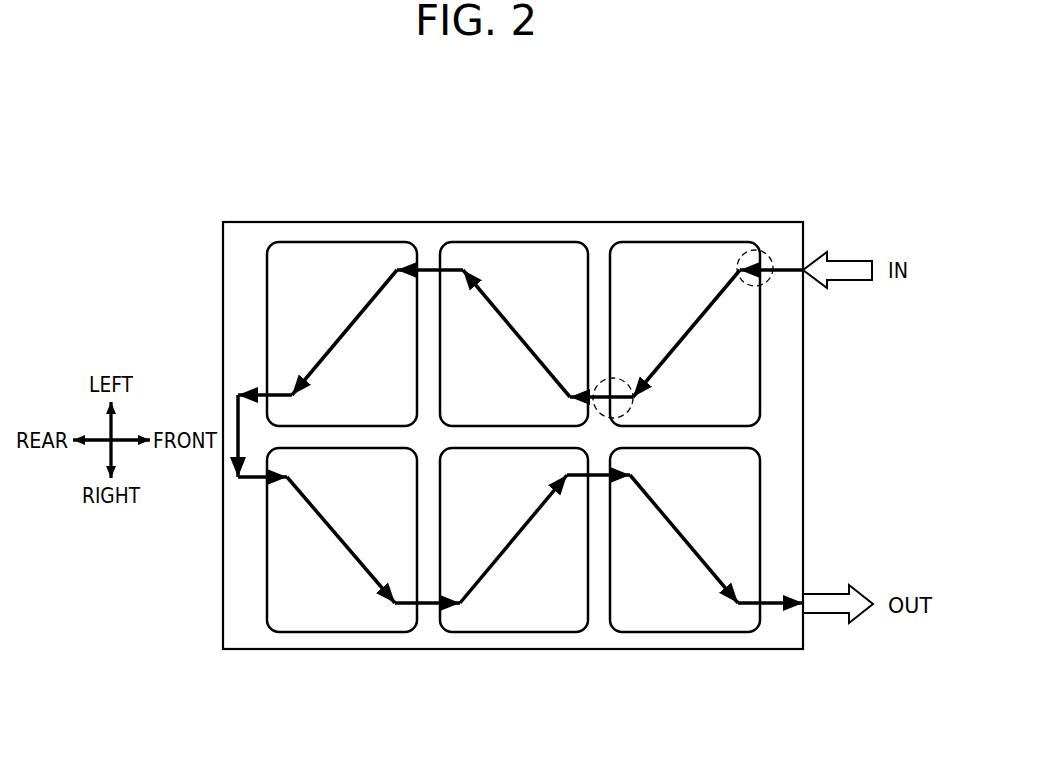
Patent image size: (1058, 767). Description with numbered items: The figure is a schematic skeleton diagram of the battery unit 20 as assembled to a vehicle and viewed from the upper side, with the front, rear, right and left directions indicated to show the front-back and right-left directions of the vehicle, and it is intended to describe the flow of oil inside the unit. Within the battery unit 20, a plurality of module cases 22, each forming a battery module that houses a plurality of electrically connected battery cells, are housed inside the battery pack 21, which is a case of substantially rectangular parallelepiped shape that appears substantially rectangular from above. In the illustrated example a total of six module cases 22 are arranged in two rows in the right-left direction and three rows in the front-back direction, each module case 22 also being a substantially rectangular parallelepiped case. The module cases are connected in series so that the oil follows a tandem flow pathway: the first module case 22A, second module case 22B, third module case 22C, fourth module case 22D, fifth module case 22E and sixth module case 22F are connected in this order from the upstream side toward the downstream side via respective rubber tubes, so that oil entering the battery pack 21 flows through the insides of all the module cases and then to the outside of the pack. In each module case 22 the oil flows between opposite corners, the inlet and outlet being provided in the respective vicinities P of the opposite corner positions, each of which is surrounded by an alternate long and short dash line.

The battery unit 20 is at (702, 161).
The battery pack 21 is at (741, 220).
The module case 22 is at (513, 438).
The first module case 22A is at (660, 238).
The second module case 22B is at (484, 238).
The third module case 22C is at (310, 238).
The fourth module case 22D is at (345, 636).
The fifth module case 22E is at (516, 636).
The sixth module case 22F is at (695, 636).
The vicinities of opposite corner positions P is at (768, 282).